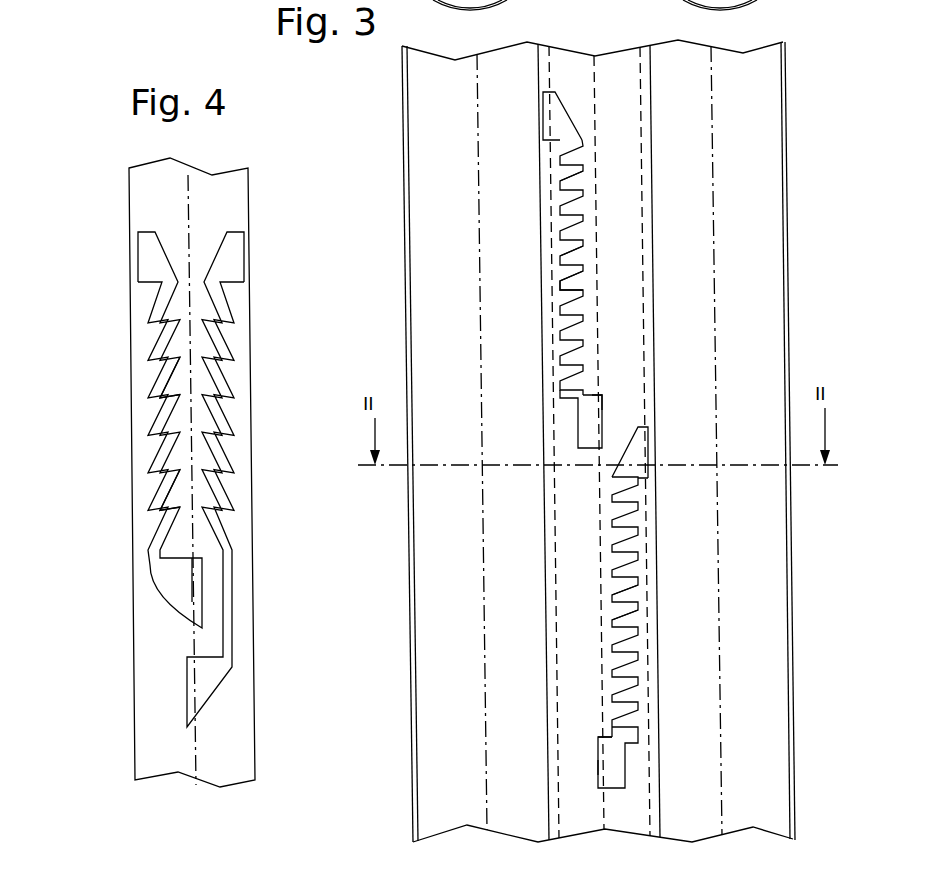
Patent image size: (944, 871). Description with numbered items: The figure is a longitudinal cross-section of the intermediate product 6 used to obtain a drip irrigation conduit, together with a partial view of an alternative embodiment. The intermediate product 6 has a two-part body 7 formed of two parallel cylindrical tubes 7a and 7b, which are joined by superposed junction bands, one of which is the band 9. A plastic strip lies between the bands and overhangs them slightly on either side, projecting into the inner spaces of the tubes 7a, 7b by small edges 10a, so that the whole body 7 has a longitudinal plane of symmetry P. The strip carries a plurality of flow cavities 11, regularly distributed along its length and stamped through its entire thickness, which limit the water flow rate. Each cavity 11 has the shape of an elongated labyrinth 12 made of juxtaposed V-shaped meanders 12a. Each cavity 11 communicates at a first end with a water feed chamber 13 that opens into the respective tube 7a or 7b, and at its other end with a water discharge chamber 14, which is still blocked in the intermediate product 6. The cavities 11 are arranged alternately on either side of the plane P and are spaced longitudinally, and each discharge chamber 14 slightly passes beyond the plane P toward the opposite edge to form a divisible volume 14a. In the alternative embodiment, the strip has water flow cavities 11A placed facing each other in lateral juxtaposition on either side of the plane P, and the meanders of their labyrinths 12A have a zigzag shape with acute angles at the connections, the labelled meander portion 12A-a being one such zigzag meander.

In FIG. 3, the intermediate product 6 is at (376, 715).
In FIG. 3, the two-part body 7 is at (591, 422).
In FIG. 3, the cylindrical tube 7a is at (405, 150).
In FIG. 3, the cylindrical tube 7b is at (787, 148).
In FIG. 3, the junction band 9 is at (652, 148).
In FIG. 3, the plane of symmetry P is at (596, 118).
In FIG. 3, the flow cavity 11 is at (600, 447).
In FIG. 3, the labyrinth 12 is at (588, 285).
In FIG. 3, the meander 12a is at (583, 250).
In FIG. 3, the water feed chamber 13 is at (555, 127).
In FIG. 3, the water discharge chamber 14 is at (600, 593).
In FIG. 3, the divisible volume 14a is at (600, 412).
In FIG. 4, the small edge 10a is at (137, 646).
In FIG. 4, the water flow cavity 11A is at (175, 479).
In FIG. 4, the labyrinth 12A is at (165, 484).
In FIG. 4, the tooth flank 12A-a is at (155, 410).